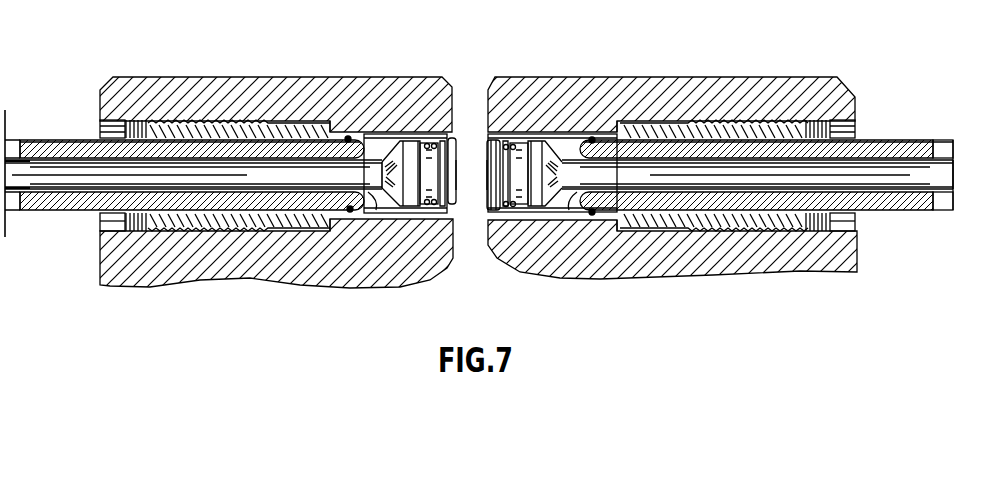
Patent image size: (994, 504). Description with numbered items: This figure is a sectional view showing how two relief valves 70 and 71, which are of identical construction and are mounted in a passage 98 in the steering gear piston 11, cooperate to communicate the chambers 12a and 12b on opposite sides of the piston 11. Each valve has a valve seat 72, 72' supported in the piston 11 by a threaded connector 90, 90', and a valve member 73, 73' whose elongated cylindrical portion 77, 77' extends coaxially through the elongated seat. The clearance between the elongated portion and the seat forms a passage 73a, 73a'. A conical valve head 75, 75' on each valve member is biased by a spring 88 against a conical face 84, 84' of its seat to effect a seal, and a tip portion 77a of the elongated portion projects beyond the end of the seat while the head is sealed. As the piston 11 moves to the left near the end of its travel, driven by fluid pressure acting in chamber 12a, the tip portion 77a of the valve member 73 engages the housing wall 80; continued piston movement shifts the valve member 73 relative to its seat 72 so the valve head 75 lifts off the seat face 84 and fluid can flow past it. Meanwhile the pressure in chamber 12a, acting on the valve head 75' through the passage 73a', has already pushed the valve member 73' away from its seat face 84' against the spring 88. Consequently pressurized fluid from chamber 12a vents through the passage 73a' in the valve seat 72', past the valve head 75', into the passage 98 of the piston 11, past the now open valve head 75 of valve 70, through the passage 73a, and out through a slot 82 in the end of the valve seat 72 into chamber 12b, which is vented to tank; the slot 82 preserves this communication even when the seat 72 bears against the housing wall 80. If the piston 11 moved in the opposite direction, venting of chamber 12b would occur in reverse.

The piston 11 is at (387, 92).
The relief valve 70 is at (312, 112).
The relief valve 71 is at (688, 116).
The valve seat 72 is at (192, 104).
The valve seat 72' is at (766, 117).
The valve member 73 is at (190, 116).
The valve member 73' is at (778, 131).
The passage 73a is at (192, 257).
The passage 73a' is at (766, 257).
The valve head 75 is at (413, 225).
The valve head 75' is at (524, 224).
The elongated cylindrical portion 77 is at (193, 174).
The elongated cylindrical portion 77' is at (757, 174).
The tip portion 77a is at (25, 182).
The housing wall 80 is at (14, 142).
The slot 82 is at (17, 140).
The conical face 84 is at (396, 228).
The conical face 84' is at (552, 228).
The spring 88 is at (483, 157).
The threaded connector 90 is at (239, 134).
The threaded connector 90' is at (737, 134).
The passage 98 is at (453, 210).
The chamber 12a is at (931, 200).
The chamber 12b is at (49, 201).